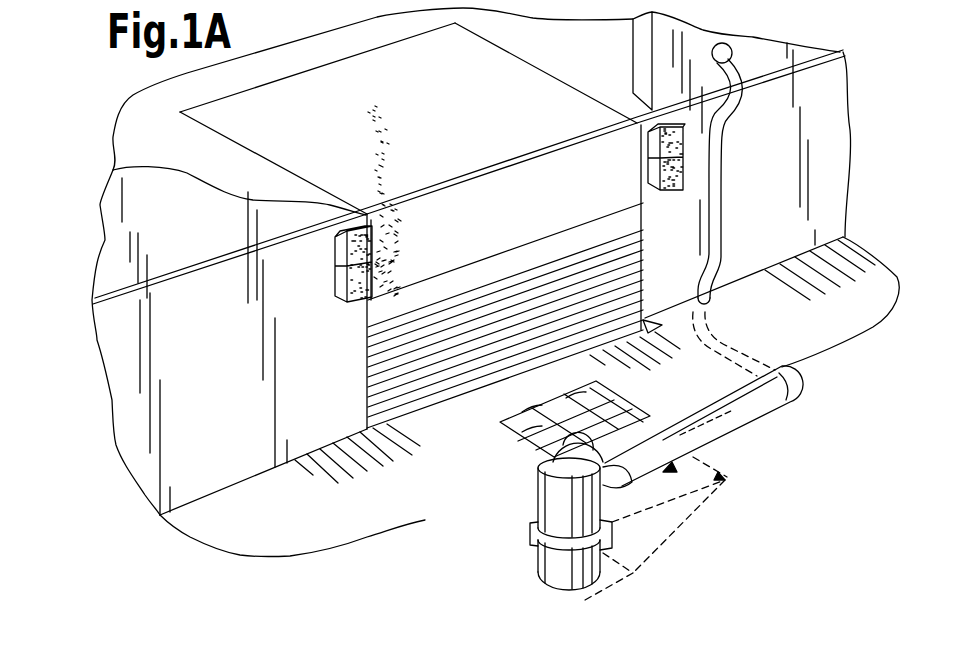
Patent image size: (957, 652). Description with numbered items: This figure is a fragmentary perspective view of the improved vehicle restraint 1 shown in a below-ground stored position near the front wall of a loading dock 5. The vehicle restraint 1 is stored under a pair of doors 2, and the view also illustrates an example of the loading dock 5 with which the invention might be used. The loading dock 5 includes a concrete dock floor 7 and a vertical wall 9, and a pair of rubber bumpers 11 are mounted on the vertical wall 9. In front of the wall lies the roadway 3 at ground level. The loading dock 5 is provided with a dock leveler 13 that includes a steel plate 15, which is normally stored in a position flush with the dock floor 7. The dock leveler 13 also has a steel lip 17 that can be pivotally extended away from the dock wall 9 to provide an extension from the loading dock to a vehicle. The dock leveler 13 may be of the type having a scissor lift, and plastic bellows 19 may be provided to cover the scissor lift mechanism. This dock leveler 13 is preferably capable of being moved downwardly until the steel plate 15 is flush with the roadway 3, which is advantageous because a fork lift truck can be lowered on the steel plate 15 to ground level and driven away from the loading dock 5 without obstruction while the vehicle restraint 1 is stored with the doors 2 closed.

The vehicle restraint 1 is at (527, 521).
The doors 2 is at (650, 417).
The roadway 3 is at (317, 520).
The loading dock 5 is at (135, 88).
The dock floor 7 is at (175, 143).
The vertical wall 9 is at (232, 404).
The rubber bumpers 11 is at (337, 258).
The dock leveler 13 is at (563, 79).
The steel plate 15 is at (434, 124).
The steel lip 17 is at (528, 226).
The plastic bellows 19 is at (367, 377).